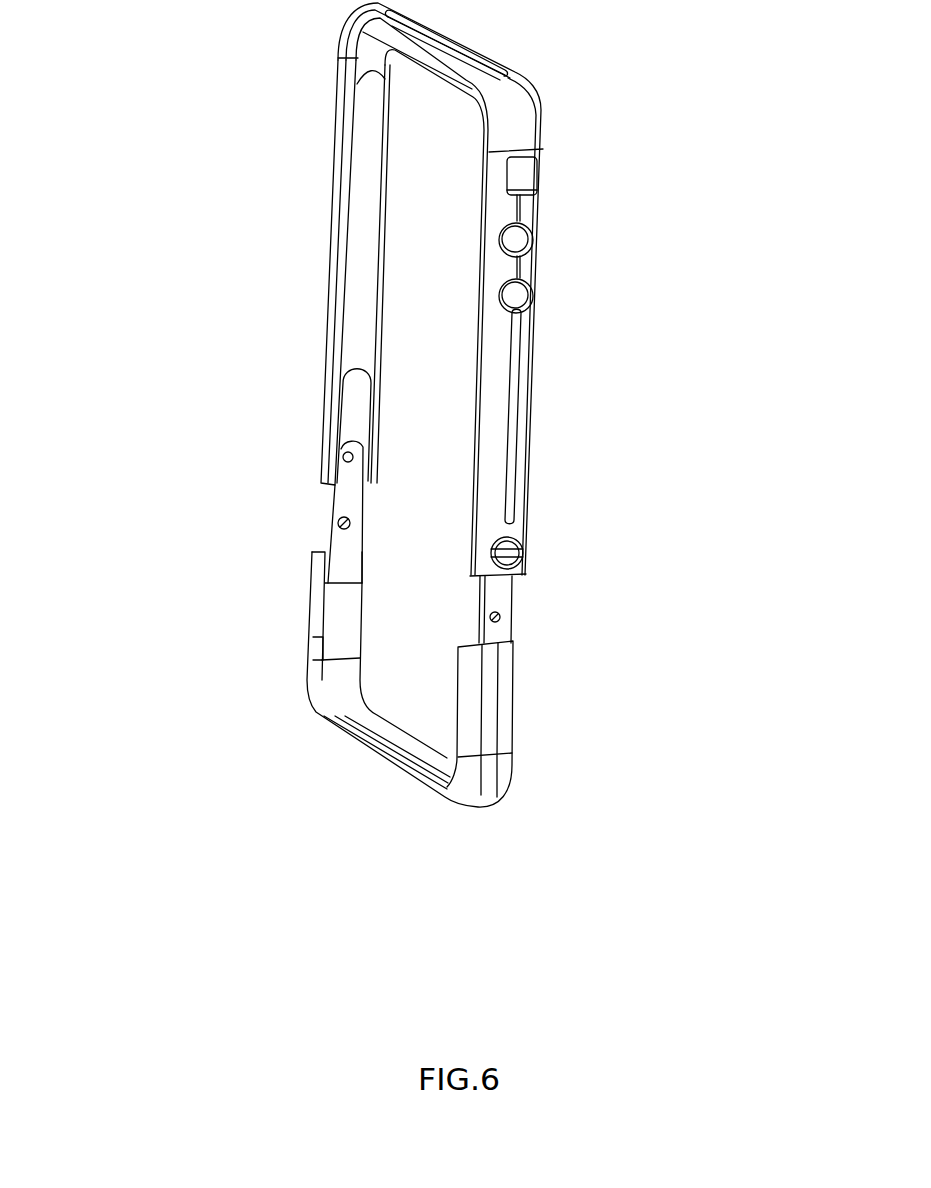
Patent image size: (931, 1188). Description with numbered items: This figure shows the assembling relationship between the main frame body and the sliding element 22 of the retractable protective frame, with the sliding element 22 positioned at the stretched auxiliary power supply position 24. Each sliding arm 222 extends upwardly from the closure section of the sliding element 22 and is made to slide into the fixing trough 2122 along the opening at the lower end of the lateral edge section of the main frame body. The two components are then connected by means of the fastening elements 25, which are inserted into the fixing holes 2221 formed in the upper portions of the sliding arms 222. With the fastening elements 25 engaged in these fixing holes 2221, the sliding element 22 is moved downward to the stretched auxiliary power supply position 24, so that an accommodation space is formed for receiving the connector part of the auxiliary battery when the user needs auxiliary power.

The sliding element 22 is at (582, 860).
The stretched auxiliary power supply position 24 is at (367, 757).
The fastening element 25 is at (522, 545).
The sliding arm 222 is at (340, 494).
The fixing trough 2122 is at (350, 408).
The fixing hole 2221 is at (343, 457).